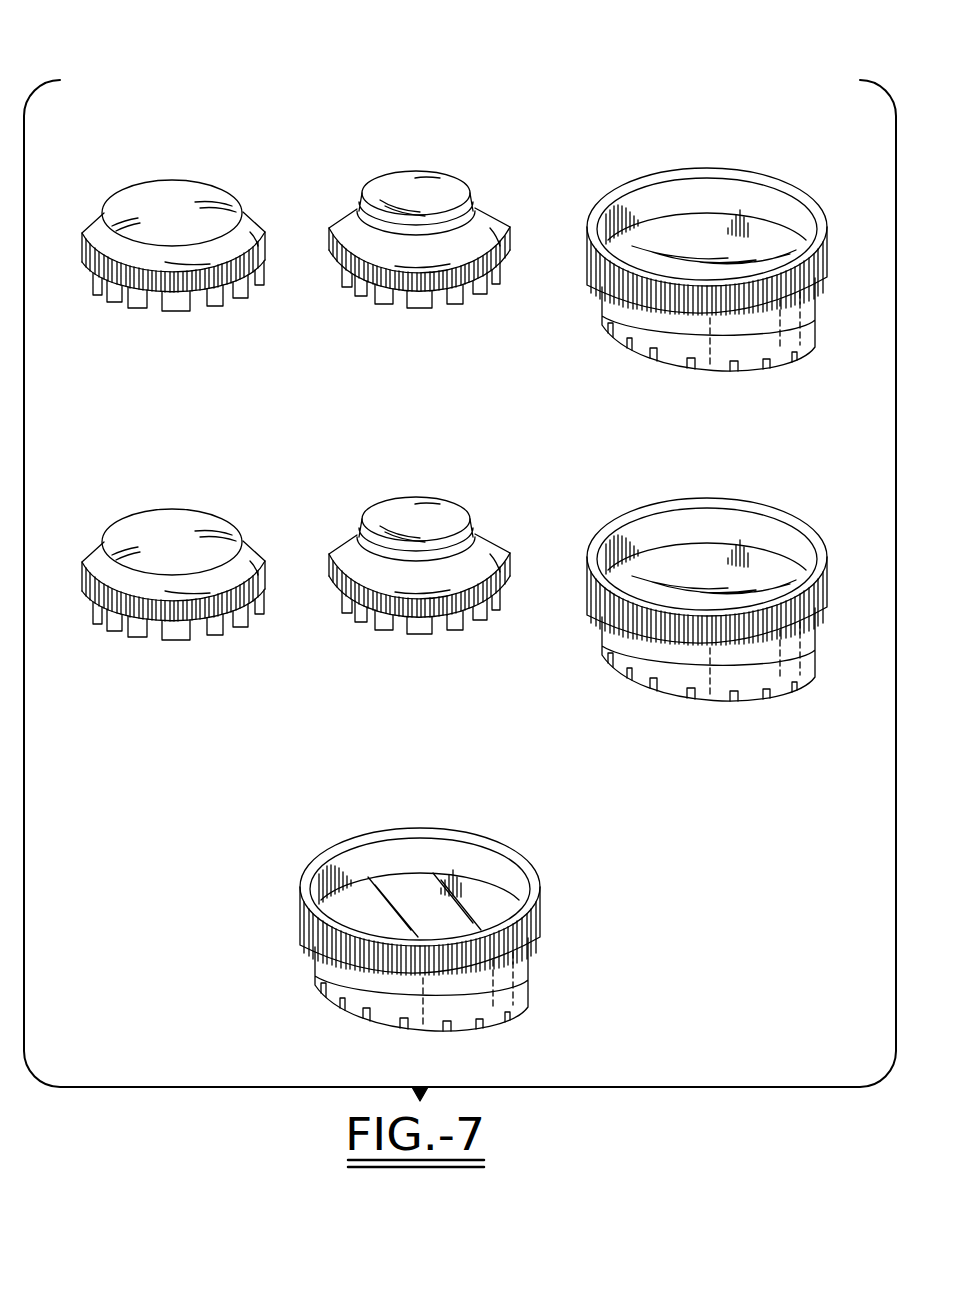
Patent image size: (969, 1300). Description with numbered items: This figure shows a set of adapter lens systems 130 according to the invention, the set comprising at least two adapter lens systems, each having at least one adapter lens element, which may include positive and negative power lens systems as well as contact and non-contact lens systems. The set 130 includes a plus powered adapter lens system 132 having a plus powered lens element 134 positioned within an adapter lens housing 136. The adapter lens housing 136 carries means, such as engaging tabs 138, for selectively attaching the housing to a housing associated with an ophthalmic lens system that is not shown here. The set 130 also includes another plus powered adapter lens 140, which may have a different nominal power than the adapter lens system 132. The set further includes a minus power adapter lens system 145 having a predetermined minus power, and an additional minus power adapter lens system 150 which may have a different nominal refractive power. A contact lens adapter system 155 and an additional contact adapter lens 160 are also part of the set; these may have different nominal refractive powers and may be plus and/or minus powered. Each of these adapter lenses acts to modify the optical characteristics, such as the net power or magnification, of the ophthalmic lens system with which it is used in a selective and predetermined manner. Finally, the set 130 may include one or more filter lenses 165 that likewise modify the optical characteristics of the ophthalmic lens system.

The set of adapter lens systems 130 is at (287, 84).
The plus powered adapter lens system 132 is at (174, 556).
The plus powered lens element 134 is at (152, 516).
The adapter lens housing 136 is at (160, 618).
The engaging tabs 138 is at (190, 634).
The plus powered adapter lens 140 is at (187, 170).
The minus power adapter lens system 145 is at (715, 154).
The minus power adapter lens system 150 is at (713, 484).
The contact lens adapter system 155 is at (459, 166).
The contact adapter lens 160 is at (449, 490).
The filter lens 165 is at (464, 822).